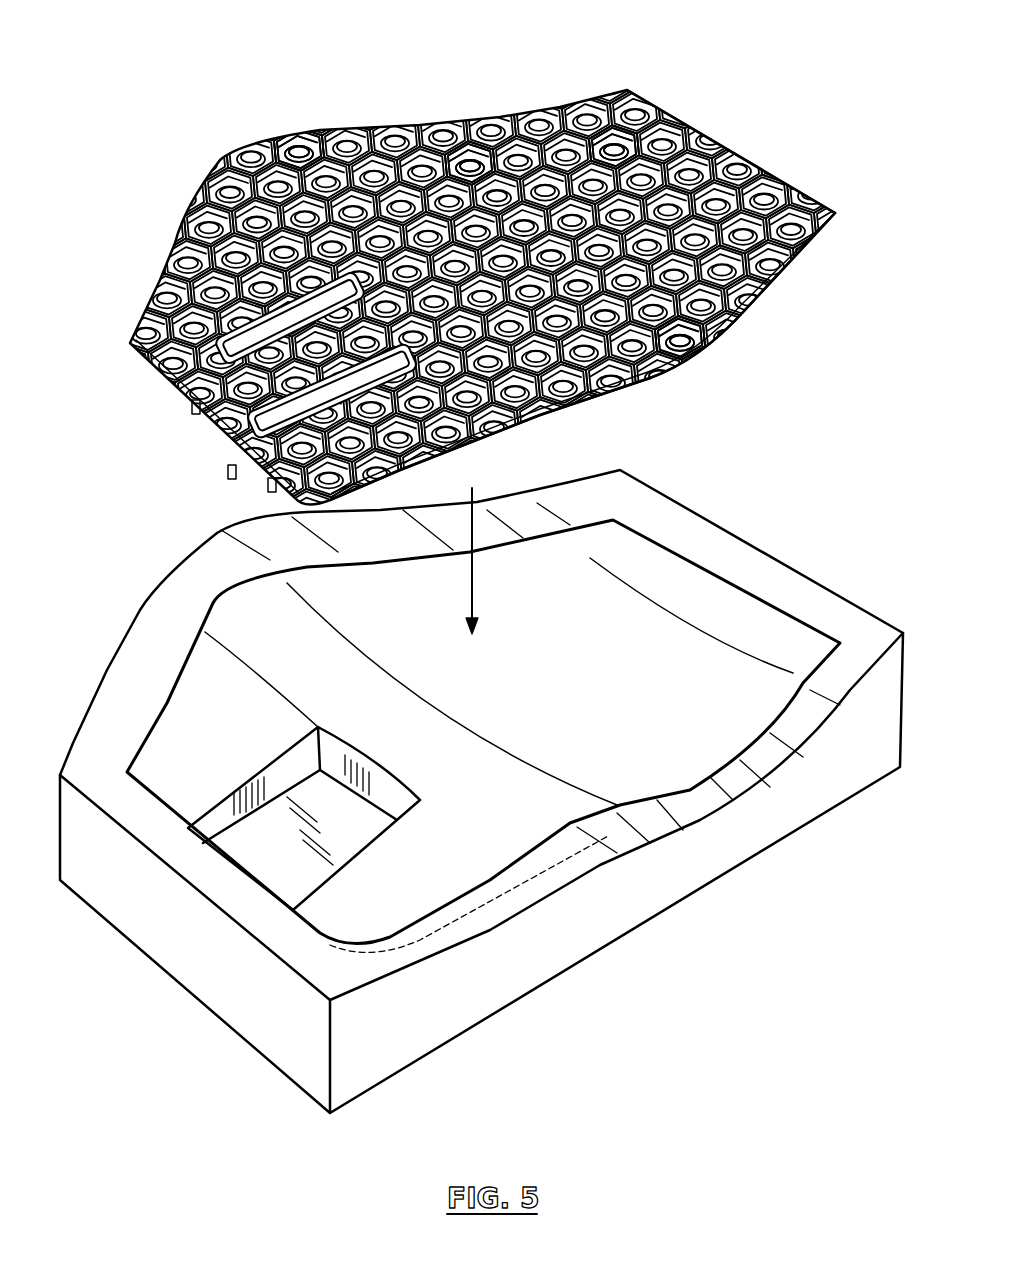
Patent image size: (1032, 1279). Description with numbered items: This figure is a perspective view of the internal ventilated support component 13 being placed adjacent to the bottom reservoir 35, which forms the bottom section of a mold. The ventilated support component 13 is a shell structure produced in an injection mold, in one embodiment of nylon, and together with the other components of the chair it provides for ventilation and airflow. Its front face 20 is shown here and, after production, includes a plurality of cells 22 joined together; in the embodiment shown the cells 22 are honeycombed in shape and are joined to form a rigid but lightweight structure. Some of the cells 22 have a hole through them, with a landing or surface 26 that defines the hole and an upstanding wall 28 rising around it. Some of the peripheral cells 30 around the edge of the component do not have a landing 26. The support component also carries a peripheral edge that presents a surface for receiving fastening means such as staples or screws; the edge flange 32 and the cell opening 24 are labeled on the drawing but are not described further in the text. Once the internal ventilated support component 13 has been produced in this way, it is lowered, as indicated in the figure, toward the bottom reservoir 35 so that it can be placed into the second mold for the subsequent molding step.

The internal ventilated support component 13 is at (753, 167).
The front face 20 is at (446, 110).
The cells 22 is at (300, 137).
The cell aperture 24 is at (466, 170).
The landing 26 is at (612, 156).
The upstanding wall 28 is at (690, 357).
The peripheral cells 30 is at (790, 262).
The edge flange 32 is at (540, 415).
The bottom reservoir 35 is at (667, 908).